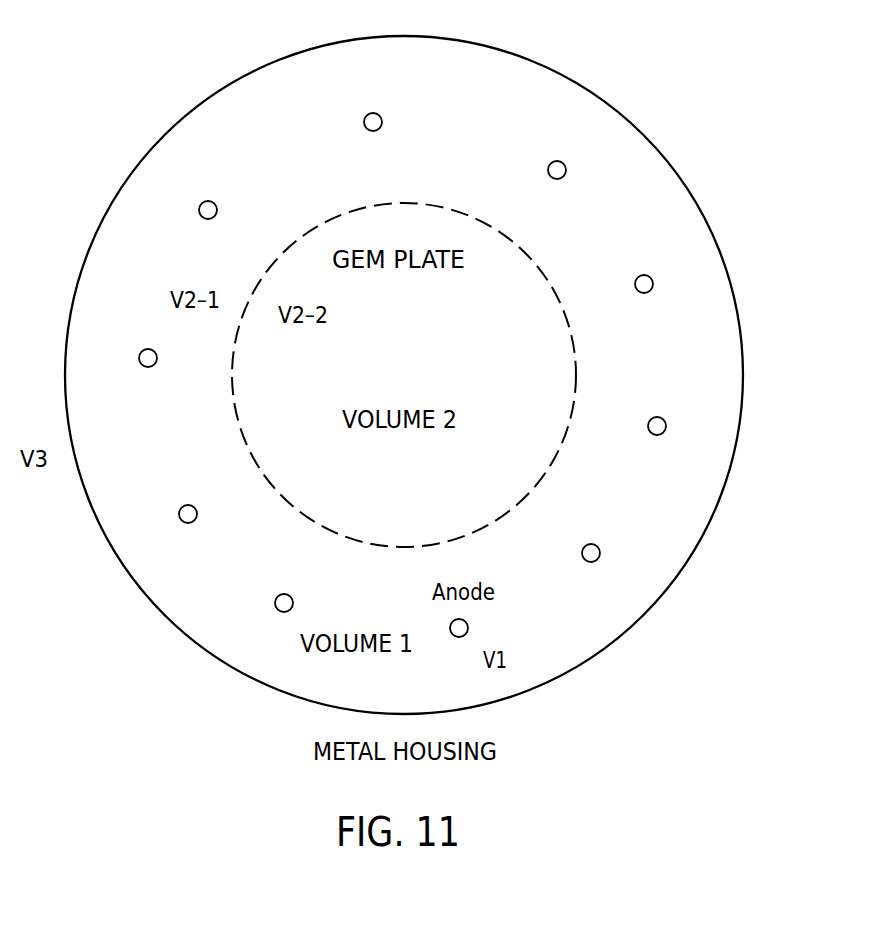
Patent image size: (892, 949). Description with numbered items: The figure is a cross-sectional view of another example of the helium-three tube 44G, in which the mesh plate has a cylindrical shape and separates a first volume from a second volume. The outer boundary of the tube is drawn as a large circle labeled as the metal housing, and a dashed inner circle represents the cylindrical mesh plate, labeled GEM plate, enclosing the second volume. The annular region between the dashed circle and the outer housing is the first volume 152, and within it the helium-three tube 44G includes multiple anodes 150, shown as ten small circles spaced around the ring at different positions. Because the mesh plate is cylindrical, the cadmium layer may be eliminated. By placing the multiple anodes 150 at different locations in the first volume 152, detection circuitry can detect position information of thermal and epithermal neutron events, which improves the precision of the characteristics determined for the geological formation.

The Helium-3 tube 44G is at (394, 365).
The anodes 150 is at (653, 282).
The first volume 152 is at (657, 565).